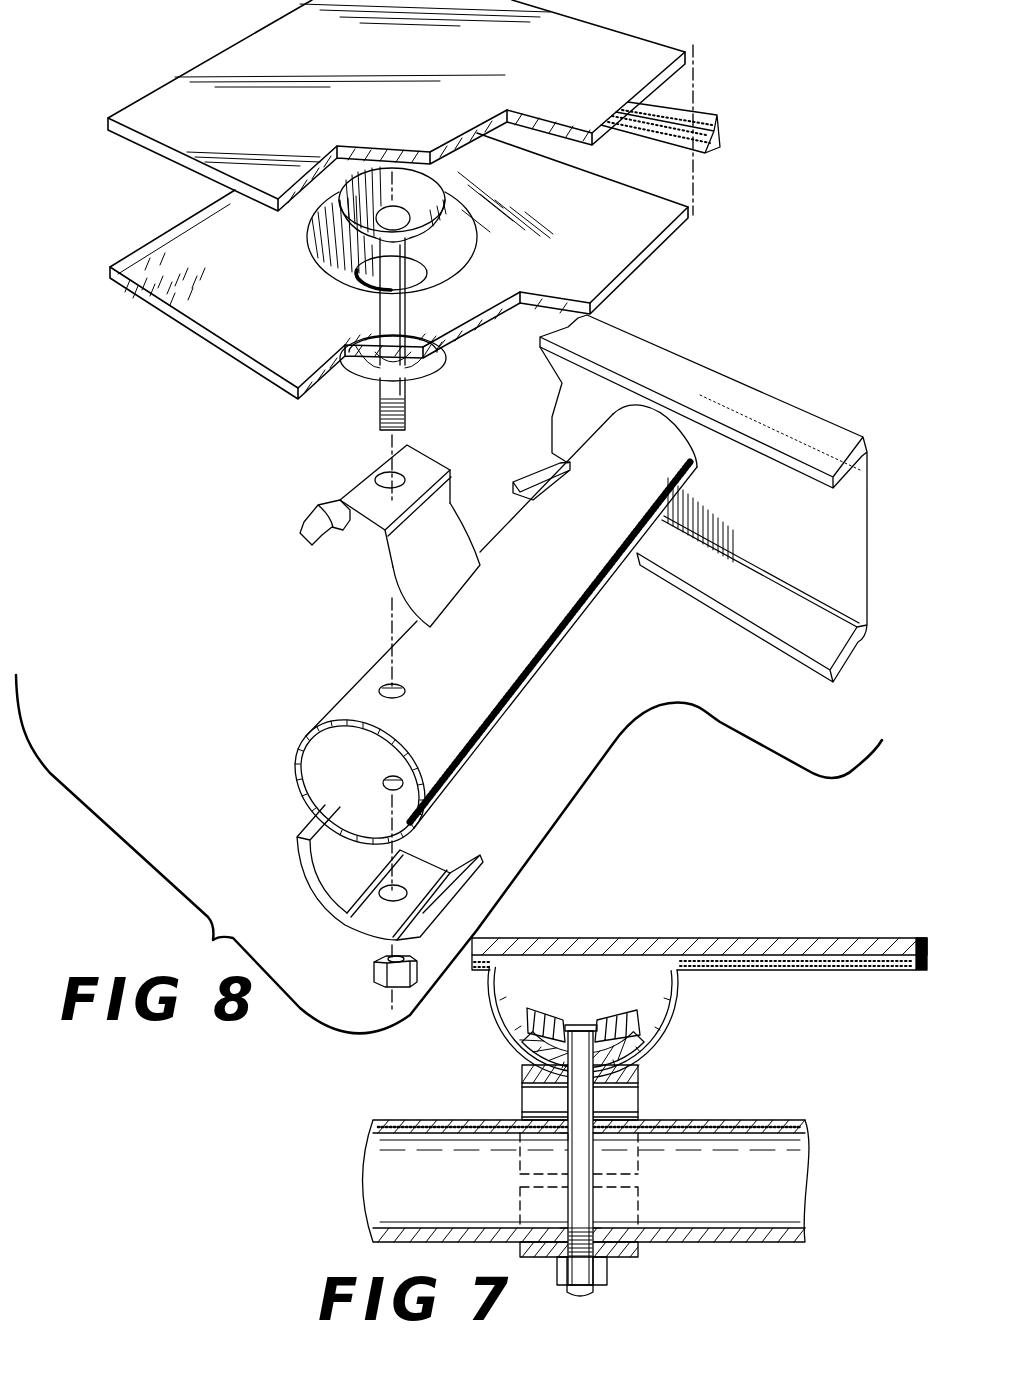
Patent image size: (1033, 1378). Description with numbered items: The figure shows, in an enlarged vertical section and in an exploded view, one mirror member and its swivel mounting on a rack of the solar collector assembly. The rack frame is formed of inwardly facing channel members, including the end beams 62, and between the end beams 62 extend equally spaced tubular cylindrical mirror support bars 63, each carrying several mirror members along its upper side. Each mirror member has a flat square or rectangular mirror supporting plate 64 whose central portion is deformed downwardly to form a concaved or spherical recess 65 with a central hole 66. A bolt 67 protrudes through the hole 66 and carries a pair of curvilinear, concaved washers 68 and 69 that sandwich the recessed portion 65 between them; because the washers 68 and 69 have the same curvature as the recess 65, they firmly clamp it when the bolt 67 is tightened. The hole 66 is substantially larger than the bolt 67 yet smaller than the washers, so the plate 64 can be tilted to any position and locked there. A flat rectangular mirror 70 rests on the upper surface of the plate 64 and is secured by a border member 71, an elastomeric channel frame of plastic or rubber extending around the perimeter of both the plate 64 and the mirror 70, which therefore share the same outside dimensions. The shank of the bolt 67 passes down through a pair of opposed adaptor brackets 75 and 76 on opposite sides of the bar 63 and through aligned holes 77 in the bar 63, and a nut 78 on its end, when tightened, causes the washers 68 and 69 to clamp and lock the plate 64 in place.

In FIG. 8, the end beam 62 is at (843, 527).
In FIG. 8, the mirror support bar 63 is at (533, 638).
In FIG. 7, the mirror support bar 63 is at (732, 1121).
In FIG. 8, the mirror supporting plate 64 is at (275, 353).
In FIG. 8, the spherical recess 65 is at (340, 262).
In FIG. 7, the spherical recess 65 is at (657, 1000).
In FIG. 8, the central hole 66 is at (420, 264).
In FIG. 7, the central hole 66 is at (606, 1027).
In FIG. 8, the bolt 67 is at (388, 391).
In FIG. 7, the bolt 67 is at (586, 1102).
In FIG. 8, the concaved washer 68 is at (432, 188).
In FIG. 7, the concaved washer 68 is at (552, 1023).
In FIG. 8, the concaved washer 69 is at (432, 355).
In FIG. 7, the concaved washer 69 is at (632, 1045).
In FIG. 8, the mirror 70 is at (620, 42).
In FIG. 7, the mirror 70 is at (735, 939).
In FIG. 8, the border member 71 is at (720, 121).
In FIG. 7, the border member 71 is at (686, 918).
In FIG. 8, the adaptor bracket 75 is at (320, 516).
In FIG. 7, the adaptor bracket 75 is at (528, 1093).
In FIG. 8, the adaptor bracket 76 is at (427, 868).
In FIG. 7, the adaptor bracket 76 is at (617, 1253).
In FIG. 8, the aligned holes 77 is at (385, 785).
In FIG. 7, the aligned holes 77 is at (593, 1229).
In FIG. 8, the nut 78 is at (376, 979).
In FIG. 7, the nut 78 is at (600, 1277).